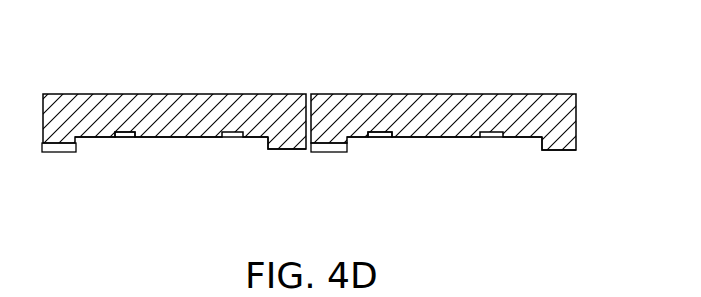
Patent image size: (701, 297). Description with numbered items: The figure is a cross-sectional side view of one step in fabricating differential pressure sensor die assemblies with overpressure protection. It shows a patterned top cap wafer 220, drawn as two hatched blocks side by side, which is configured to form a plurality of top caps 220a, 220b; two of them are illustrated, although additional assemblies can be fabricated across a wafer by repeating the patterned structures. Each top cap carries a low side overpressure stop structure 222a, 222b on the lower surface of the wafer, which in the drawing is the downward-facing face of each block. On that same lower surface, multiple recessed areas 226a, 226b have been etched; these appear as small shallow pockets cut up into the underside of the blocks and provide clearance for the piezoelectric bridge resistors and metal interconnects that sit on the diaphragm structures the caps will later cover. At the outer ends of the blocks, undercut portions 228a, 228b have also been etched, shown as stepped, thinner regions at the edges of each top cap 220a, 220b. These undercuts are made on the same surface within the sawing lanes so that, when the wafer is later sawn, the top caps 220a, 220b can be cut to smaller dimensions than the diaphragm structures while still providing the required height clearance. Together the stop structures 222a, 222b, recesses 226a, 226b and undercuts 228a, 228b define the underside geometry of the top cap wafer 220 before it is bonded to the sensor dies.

The patterned top cap wafer 220 is at (340, 130).
The top cap 220a is at (169, 127).
The top cap 220b is at (447, 130).
The low side overpressure stop structure 222a is at (205, 137).
The low side overpressure stop structure 222b is at (457, 137).
The recessed area 226a is at (121, 137).
The recessed area 226b is at (390, 137).
The undercut portion 228a is at (46, 152).
The undercut portion 228b is at (340, 152).